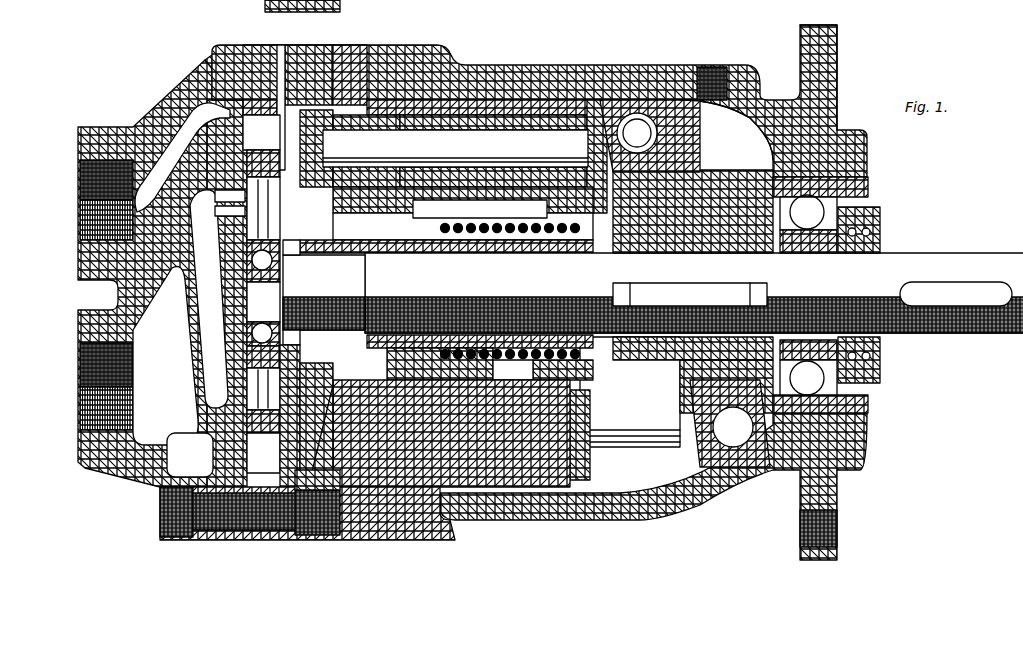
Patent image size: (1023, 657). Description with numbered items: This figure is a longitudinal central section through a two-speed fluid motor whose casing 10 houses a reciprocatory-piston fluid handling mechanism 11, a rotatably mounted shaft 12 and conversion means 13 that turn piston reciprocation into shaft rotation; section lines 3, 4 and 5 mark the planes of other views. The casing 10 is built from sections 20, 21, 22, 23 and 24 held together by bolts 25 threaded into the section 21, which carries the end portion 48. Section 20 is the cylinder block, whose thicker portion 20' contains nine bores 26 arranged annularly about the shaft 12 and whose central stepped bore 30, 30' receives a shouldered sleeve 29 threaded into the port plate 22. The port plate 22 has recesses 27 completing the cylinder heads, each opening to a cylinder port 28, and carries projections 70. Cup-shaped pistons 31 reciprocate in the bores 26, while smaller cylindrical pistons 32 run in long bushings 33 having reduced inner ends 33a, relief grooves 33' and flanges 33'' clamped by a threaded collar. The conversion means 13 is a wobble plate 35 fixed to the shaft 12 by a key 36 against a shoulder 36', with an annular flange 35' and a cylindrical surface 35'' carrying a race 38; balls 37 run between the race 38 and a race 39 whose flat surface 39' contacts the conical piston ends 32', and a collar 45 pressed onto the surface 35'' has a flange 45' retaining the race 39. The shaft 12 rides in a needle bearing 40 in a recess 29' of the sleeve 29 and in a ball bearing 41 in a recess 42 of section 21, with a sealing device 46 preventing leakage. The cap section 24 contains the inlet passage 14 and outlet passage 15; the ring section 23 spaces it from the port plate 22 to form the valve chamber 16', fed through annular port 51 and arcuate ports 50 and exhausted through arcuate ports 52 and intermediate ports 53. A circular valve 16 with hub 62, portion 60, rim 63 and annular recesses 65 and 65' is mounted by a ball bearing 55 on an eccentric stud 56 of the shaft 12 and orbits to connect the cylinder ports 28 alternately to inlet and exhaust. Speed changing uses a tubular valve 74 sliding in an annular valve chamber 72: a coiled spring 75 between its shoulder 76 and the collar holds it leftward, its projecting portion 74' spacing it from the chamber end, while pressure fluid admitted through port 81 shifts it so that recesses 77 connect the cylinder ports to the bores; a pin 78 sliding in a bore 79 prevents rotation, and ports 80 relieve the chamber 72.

The section line 3 is at (226, 305).
The section line 4 is at (440, 32).
The section line 5 is at (225, 33).
The casing 10 is at (558, 62).
The fluid handling mechanism 11 is at (635, 450).
The shaft 12 is at (935, 248).
The conversion means 13 is at (712, 175).
The inlet passage 14 is at (80, 186).
The outlet passage 15 is at (82, 395).
The valve 16 is at (263, 178).
The valve chamber 16' is at (222, 261).
The cylinder block 20 is at (307, 527).
The thicker portion 20' is at (527, 521).
The casing section 21 is at (598, 540).
The port plate 22 is at (300, 540).
The casing section 23 is at (280, 540).
The casing section 24 is at (192, 540).
The bolts 25 is at (195, 500).
The bores 26 is at (472, 100).
The recesses 27 is at (310, 60).
The cylinder port 28 is at (455, 148).
The shouldered sleeve 29 is at (446, 269).
The recess 29' is at (394, 264).
The stepped bore 30 is at (470, 359).
The valve body upper 30' is at (473, 205).
The cup-shaped pistons 31 is at (333, 60).
The cylindrical pistons 32 is at (585, 291).
The piston ends 32' is at (546, 150).
The bushings 33 is at (591, 128).
The annular relief grooves 33' is at (515, 81).
The flanges 33'' is at (608, 266).
The inner ends 33a is at (400, 100).
The wobble plate 35 is at (693, 211).
The annular flange 35' is at (668, 136).
The cylindrical surface 35'' is at (693, 318).
The key 36 is at (690, 283).
The shoulder 36' is at (802, 269).
The balls 37 is at (650, 122).
The race 38 is at (680, 135).
The race 39 is at (622, 96).
The flat surface 39' is at (684, 465).
The needle bearing 40 is at (324, 292).
The ball bearing 41 is at (838, 187).
The recess 42 is at (812, 196).
The collar 45 is at (730, 450).
The projecting flange 45' is at (699, 504).
The sealing device 46 is at (880, 228).
The mounting flange 48 is at (828, 55).
The arcuate ports 50 is at (207, 124).
The annular port 51 is at (180, 100).
The arcuate ports 52 is at (205, 252).
The intermediate ports 53 is at (178, 338).
The ball bearing 55 is at (282, 262).
The stud 56 is at (282, 292).
The port 60 is at (232, 196).
The hub 62 is at (240, 210).
The rim 63 is at (261, 132).
The annular recess 65 is at (263, 441).
The annular recess 65' is at (220, 380).
The projections 70 is at (281, 60).
The annular valve chamber 72 is at (510, 380).
The tubular valve 74 is at (480, 244).
The projecting portion 74' is at (421, 264).
The coiled spring 75 is at (520, 348).
The shoulder 76 is at (440, 345).
The recesses 77 is at (428, 200).
The pin 78 is at (540, 240).
The bore 79 is at (570, 253).
The ports 80 is at (563, 369).
The fluid port 81 is at (345, 470).